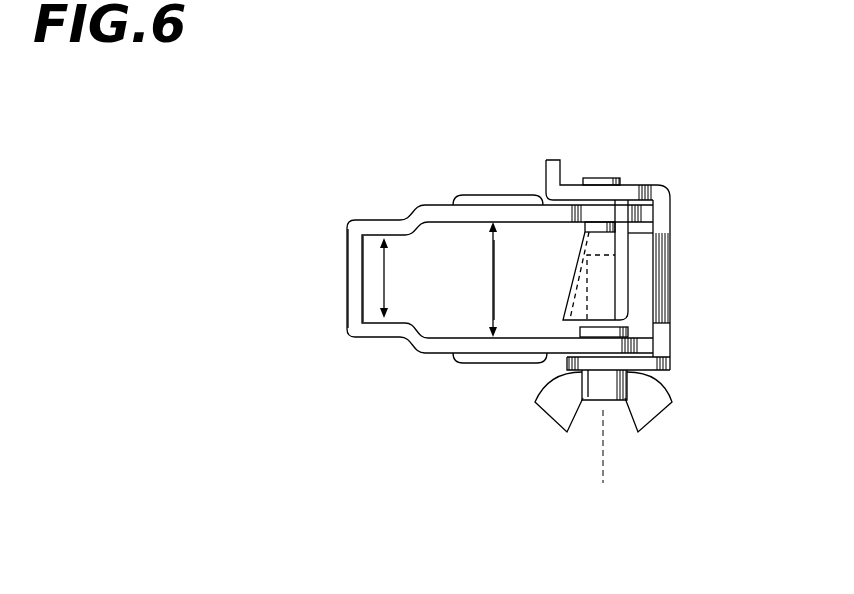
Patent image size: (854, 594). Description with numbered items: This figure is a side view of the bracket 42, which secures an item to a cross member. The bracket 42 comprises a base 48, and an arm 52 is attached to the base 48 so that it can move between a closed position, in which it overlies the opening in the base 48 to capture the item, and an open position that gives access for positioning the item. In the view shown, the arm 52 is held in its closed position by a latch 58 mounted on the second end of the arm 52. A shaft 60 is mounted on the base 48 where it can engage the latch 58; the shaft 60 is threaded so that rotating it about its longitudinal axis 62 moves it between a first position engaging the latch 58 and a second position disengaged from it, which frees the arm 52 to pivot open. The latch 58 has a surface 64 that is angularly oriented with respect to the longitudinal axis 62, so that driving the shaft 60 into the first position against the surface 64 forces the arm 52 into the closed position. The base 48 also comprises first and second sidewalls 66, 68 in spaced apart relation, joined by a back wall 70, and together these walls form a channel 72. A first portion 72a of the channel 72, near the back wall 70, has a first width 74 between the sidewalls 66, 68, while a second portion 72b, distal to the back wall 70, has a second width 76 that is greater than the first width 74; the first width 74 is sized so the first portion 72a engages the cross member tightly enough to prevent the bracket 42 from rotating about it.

The bracket 42 is at (410, 140).
The base 48 is at (422, 354).
The arm 52 is at (670, 217).
The latch 58 is at (640, 263).
The shaft 60 is at (573, 300).
The longitudinal axis 62 is at (603, 447).
The surface 64 is at (603, 288).
The first sidewall 66 is at (433, 205).
The second sidewall 68 is at (471, 352).
The back wall 70 is at (347, 253).
The channel 72 is at (462, 288).
The first portion of channel 72a is at (368, 247).
The second portion of channel 72b is at (544, 200).
The first width 74 is at (387, 280).
The second width 76 is at (497, 265).